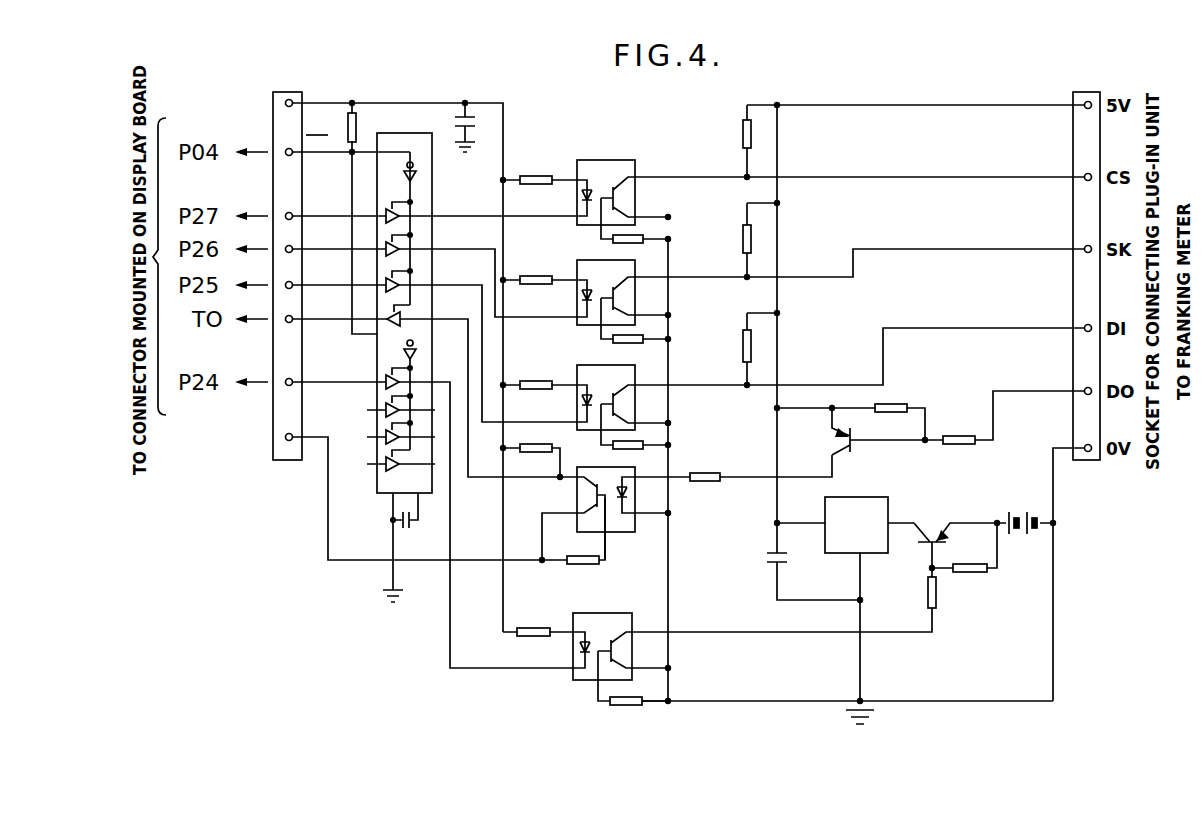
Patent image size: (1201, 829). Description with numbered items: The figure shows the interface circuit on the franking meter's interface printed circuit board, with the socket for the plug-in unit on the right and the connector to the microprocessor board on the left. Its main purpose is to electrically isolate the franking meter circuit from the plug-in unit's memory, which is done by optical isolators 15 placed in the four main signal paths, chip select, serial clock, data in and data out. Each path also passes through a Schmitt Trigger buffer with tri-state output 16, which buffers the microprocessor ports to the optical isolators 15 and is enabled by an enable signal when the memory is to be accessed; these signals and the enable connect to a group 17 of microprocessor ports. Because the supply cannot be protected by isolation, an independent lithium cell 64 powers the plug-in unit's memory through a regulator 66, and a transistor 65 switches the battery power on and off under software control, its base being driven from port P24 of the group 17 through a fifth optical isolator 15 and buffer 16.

The optical isolator 15 is at (590, 613).
The Schmitt Trigger buffer with tri-state output 16 is at (432, 212).
The group of microprocessor ports 17 is at (230, 128).
The lithium cell 64 is at (1023, 508).
The transistor 65 is at (937, 522).
The regulator 66 is at (848, 497).